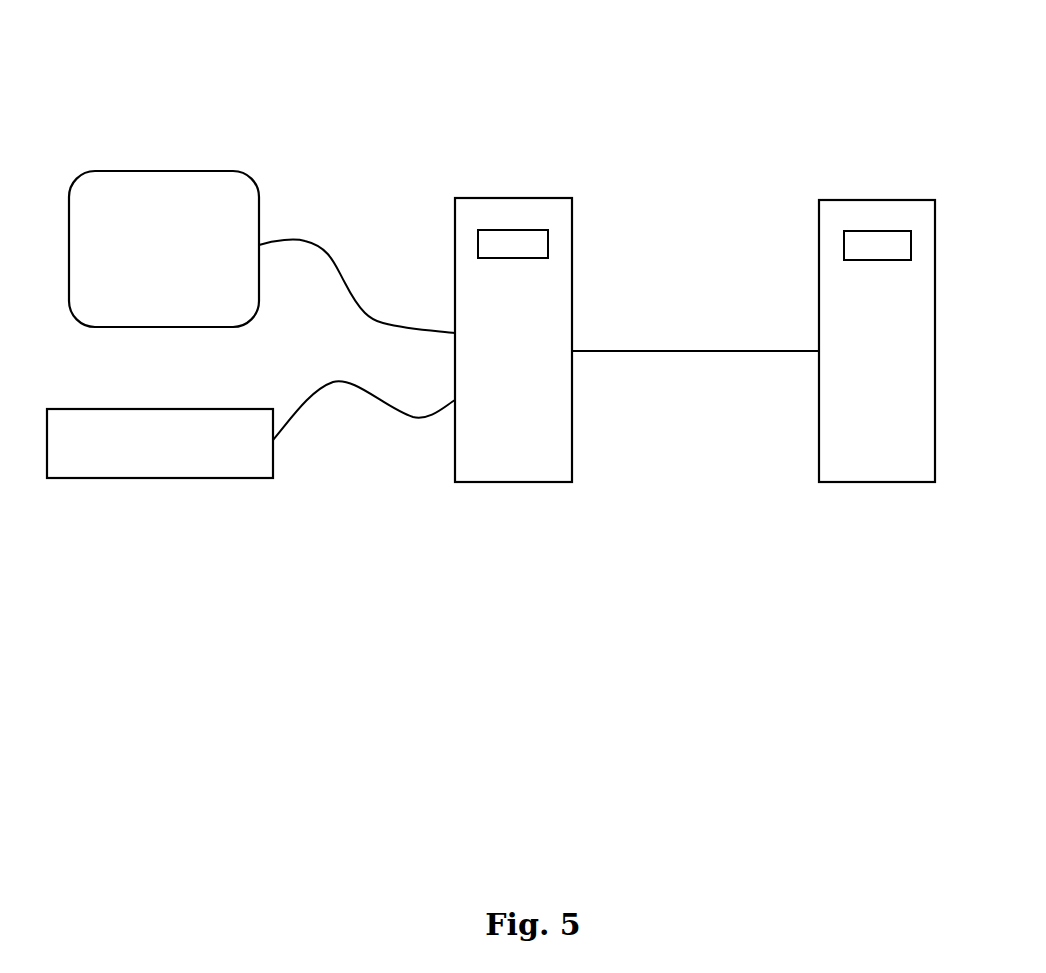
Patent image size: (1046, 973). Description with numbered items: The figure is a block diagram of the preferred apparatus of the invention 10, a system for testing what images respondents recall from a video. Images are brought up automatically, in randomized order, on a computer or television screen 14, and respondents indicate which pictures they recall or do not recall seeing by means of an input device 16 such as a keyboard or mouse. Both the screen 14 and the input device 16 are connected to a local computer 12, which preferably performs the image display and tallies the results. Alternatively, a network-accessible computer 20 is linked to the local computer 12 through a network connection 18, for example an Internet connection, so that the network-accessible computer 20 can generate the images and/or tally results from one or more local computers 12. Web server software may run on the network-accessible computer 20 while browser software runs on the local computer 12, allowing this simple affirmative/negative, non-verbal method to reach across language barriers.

The preferred apparatus of the invention 10 is at (543, 90).
The local computer 12 is at (572, 222).
The computer or television screen 14 is at (193, 187).
The input device 16 is at (218, 464).
The network connection 18 is at (675, 354).
The network-accessible computer 20 is at (918, 200).